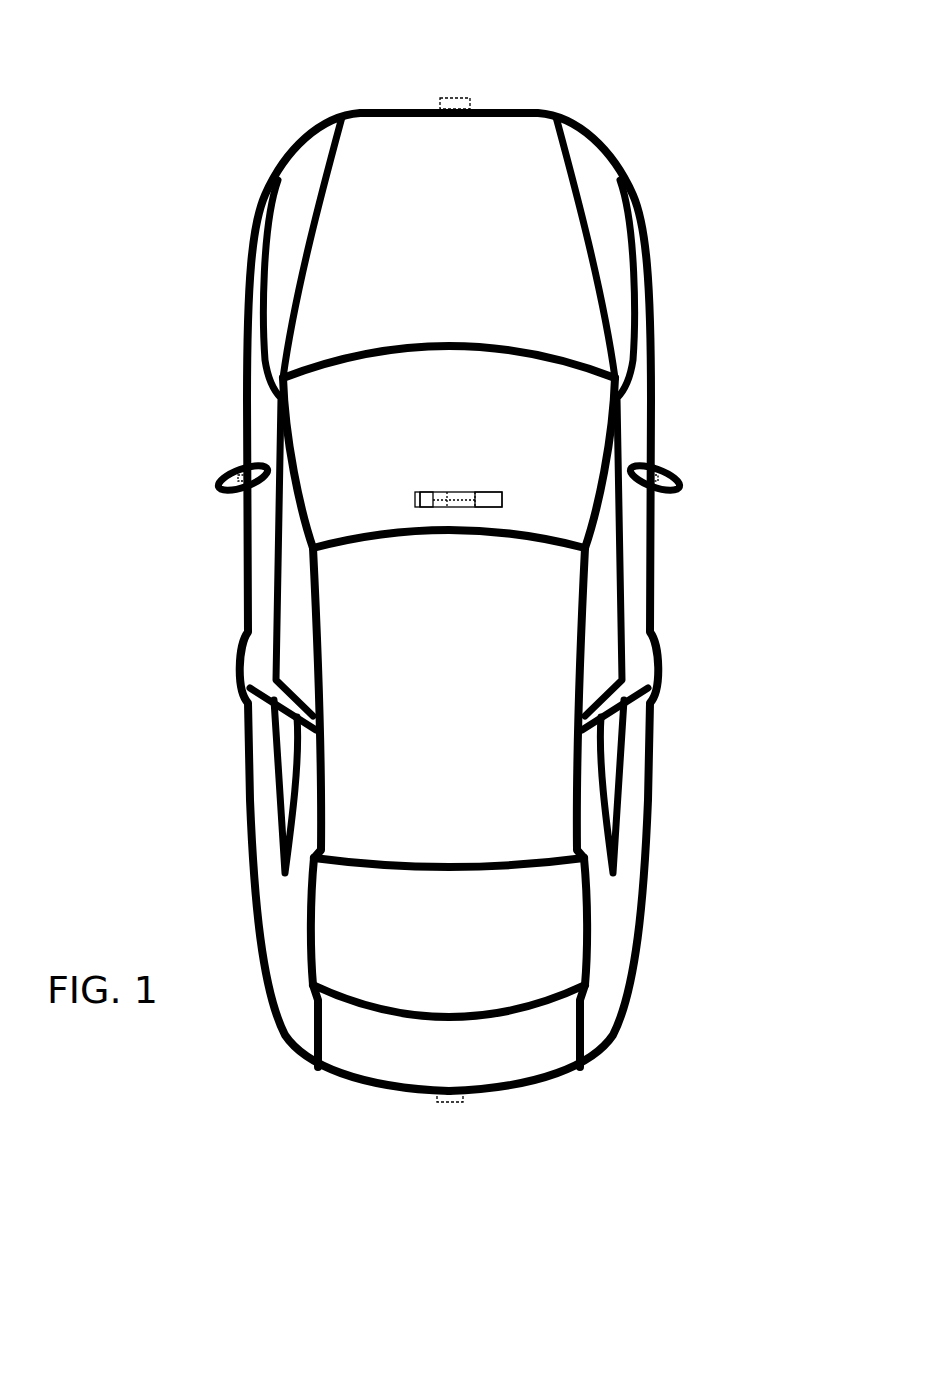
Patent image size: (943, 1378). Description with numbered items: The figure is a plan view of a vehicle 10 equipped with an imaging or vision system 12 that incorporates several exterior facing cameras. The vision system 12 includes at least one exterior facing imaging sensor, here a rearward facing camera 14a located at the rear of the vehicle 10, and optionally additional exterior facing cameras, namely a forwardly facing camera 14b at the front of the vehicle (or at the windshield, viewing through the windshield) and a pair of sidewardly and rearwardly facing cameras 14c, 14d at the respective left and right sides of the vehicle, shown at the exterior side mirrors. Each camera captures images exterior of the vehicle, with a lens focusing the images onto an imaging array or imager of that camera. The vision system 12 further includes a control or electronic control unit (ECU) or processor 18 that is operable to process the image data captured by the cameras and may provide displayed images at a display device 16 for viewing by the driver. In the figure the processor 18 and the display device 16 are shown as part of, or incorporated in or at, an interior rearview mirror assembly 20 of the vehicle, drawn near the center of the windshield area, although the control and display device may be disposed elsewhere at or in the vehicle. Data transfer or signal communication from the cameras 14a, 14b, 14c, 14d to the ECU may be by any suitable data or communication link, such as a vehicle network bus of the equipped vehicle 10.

The vehicle 10 is at (200, 205).
The vision system 12 is at (401, 1122).
The rearward facing camera 14a is at (453, 1102).
The forwardly facing camera 14b is at (458, 98).
The sidewardly/rearwardly facing camera 14c is at (245, 478).
The sidewardly/rearwardly facing camera 14d is at (651, 478).
The display device 16 is at (432, 497).
The electronic control unit 18 is at (455, 492).
The interior rearview mirror assembly 20 is at (503, 492).